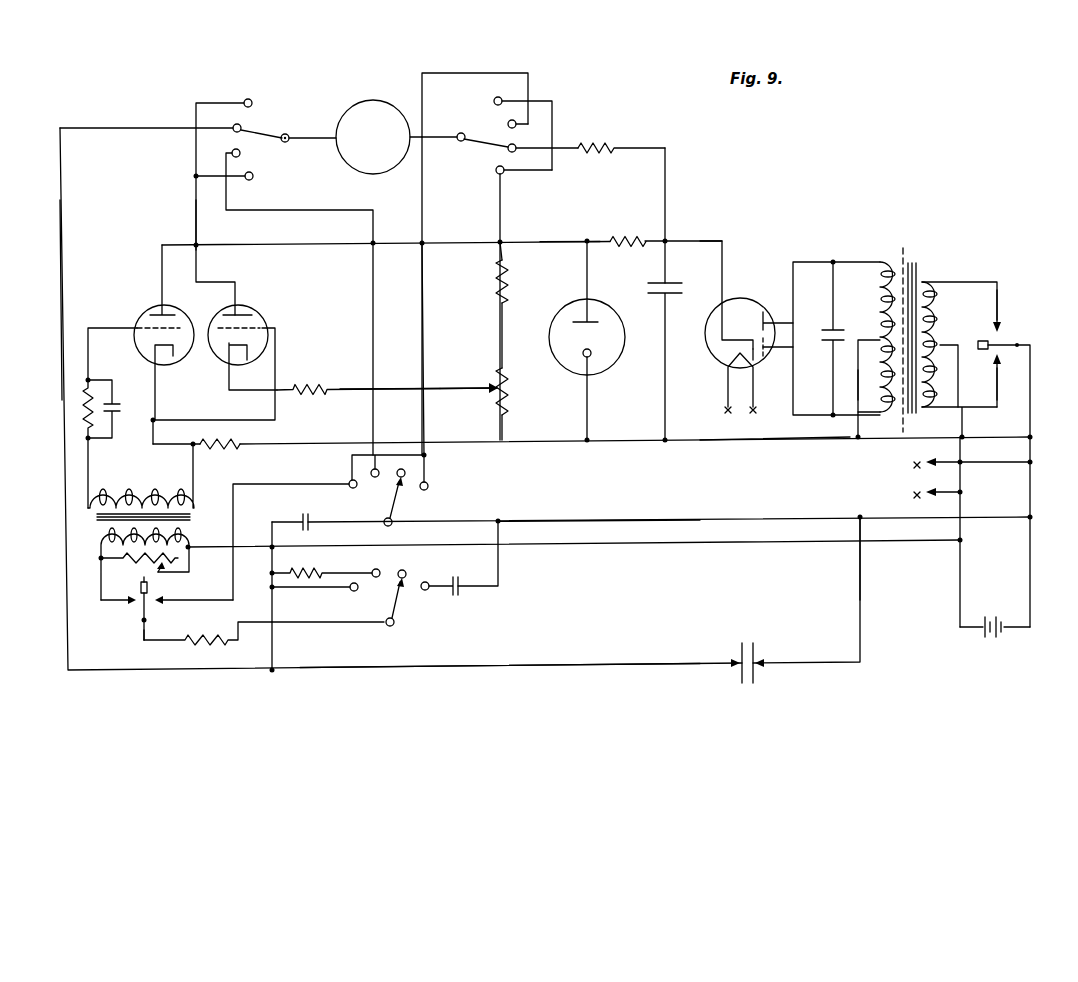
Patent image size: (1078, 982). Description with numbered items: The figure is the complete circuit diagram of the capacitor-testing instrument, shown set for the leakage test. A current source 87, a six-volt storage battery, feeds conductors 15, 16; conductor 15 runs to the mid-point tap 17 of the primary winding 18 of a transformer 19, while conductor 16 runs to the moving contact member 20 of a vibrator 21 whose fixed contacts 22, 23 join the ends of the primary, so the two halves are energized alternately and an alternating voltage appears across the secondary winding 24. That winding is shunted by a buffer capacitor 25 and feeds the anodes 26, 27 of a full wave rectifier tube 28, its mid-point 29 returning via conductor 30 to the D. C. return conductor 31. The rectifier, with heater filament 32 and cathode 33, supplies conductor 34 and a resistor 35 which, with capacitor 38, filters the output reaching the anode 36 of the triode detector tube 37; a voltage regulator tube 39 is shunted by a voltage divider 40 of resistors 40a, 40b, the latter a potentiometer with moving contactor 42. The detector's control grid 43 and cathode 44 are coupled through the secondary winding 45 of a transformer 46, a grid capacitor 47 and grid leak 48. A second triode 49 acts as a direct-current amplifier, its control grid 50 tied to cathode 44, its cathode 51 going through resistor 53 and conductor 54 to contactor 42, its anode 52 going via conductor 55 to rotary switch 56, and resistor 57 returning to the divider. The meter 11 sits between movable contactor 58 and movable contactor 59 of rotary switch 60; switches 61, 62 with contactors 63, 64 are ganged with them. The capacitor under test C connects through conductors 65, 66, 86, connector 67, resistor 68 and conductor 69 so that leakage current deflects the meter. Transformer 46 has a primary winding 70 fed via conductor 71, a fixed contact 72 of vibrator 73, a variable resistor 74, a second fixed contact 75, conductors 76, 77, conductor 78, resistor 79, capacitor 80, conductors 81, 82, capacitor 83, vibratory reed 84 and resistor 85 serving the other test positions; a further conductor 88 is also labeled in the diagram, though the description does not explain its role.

The meter 11 is at (385, 90).
The conductor 15 is at (960, 589).
The conductor 16 is at (1030, 586).
The mid-point tap 17 is at (942, 343).
The primary winding 18 is at (940, 303).
The transformer 19 is at (921, 246).
The moving contact member 20 is at (1010, 346).
The vibrator 21 is at (1003, 333).
The fixed contact 22 is at (985, 340).
The fixed contact 23 is at (1006, 352).
The secondary winding 24 is at (879, 300).
The buffer capacitor 25 is at (823, 334).
The anode 26 is at (763, 311).
The anode 27 is at (760, 360).
The full wave rectifier tube 28 is at (736, 297).
The mid-point 29 is at (870, 340).
The conductor 30 is at (857, 369).
The D. C. return conductor 31 is at (820, 441).
The cathode heater filament 32 is at (723, 354).
The cathode 33 is at (762, 336).
The conductor 34 is at (550, 241).
The resistor 35 is at (626, 236).
The anode 36 is at (146, 311).
The triode detector tube 37 is at (137, 350).
The capacitor 38 is at (681, 290).
The voltage regulator tube 39 is at (612, 366).
The voltage divider 40 is at (504, 353).
The resistor 40a is at (510, 286).
The resistor 40b is at (510, 402).
The moving contactor 42 is at (494, 384).
The control grid 43 is at (176, 326).
The cathode 44 is at (175, 358).
The secondary winding 45 is at (150, 500).
The transformer 46 is at (192, 519).
The grid capacitor 47 is at (117, 410).
The grid leak 48 is at (86, 420).
The second triode 49 is at (265, 318).
The control grid 50 is at (262, 330).
The cathode 51 is at (245, 362).
The anode 52 is at (244, 312).
The resistor 53 is at (313, 385).
The conductor 54 is at (395, 387).
The conductor 55 is at (196, 222).
The multiple contact rotary switch 56 is at (284, 85).
The resistor 57 is at (224, 451).
The movable contactor 58 is at (262, 134).
The movable contactor 59 is at (472, 144).
The rotary switch 60 is at (500, 264).
The rotary switch 61 is at (466, 495).
The rotary switch 62 is at (435, 631).
The rotary contactor 63 is at (398, 511).
The movable contactor 64 is at (393, 608).
The conductor 65 is at (860, 596).
The conductor 66 is at (486, 671).
The connector 67 is at (500, 205).
The resistor 68 is at (606, 142).
The conductor 69 is at (665, 182).
The primary winding 70 is at (101, 545).
The conductor 71 is at (600, 545).
The fixed contact 72 is at (130, 609).
The vibrator 73 is at (158, 597).
The variable resistor 74 is at (138, 565).
The fixed contact 75 is at (160, 604).
The conductor 76 is at (233, 509).
The conductor 77 is at (422, 318).
The conductor 78 is at (272, 643).
The resistor 79 is at (320, 566).
The capacitor 80 is at (314, 502).
The conductor 81 is at (580, 520).
The conductor 82 is at (498, 578).
The capacitor 83 is at (460, 597).
The vibratory reed 84 is at (142, 606).
The resistor 85 is at (208, 650).
The conductor 86 is at (60, 265).
The current source 87 is at (995, 640).
The conductor 88 is at (373, 272).
The capacitor under test C is at (747, 675).